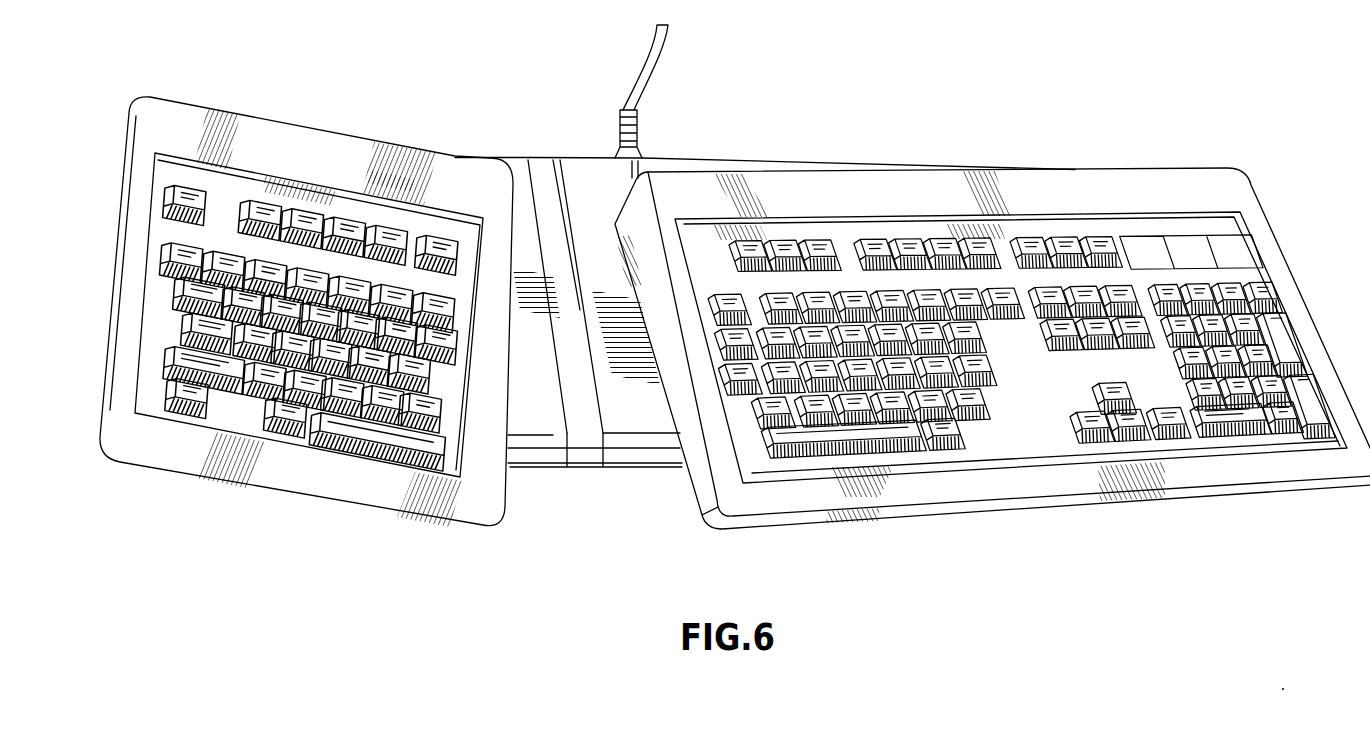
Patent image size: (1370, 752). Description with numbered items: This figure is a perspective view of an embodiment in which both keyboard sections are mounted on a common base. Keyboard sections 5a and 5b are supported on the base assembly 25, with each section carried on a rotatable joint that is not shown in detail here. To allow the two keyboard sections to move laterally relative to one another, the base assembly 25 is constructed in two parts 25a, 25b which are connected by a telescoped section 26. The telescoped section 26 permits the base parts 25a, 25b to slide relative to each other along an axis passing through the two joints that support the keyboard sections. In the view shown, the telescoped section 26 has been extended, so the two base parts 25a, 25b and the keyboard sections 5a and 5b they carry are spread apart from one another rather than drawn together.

The keyboard section 5a is at (117, 234).
The keyboard section 5b is at (1275, 248).
The base assembly 25 is at (556, 482).
The base part 25a is at (490, 157).
The base part 25b is at (1072, 168).
The telescoped section 26 is at (538, 130).